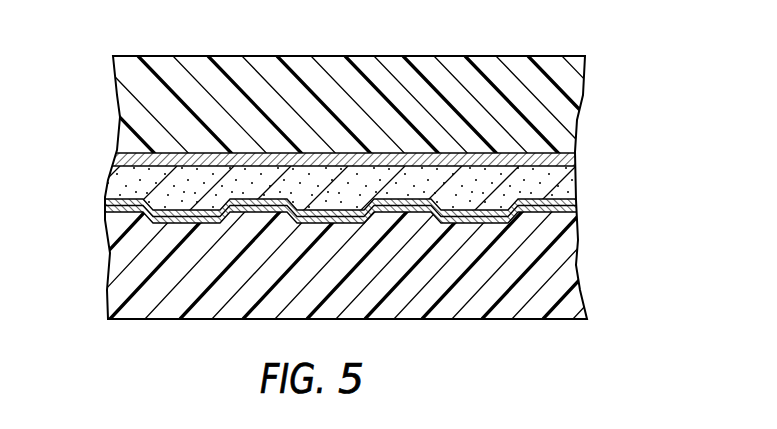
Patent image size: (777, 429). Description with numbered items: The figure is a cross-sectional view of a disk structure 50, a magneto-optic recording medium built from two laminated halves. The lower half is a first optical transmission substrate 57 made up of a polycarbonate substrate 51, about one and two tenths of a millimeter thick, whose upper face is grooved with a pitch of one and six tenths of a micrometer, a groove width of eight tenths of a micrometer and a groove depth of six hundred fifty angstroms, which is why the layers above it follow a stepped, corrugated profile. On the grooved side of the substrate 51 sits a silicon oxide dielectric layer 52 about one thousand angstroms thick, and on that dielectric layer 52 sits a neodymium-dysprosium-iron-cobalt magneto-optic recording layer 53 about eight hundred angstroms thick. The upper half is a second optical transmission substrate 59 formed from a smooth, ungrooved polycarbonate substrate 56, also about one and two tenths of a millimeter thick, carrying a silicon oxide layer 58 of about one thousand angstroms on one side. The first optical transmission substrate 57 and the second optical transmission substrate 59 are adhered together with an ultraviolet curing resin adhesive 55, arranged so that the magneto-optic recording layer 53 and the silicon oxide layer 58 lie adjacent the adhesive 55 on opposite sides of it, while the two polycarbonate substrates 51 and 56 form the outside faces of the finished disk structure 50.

The disk structure 50 is at (88, 55).
The polycarbonate substrate 51 is at (561, 255).
The silicon oxide dielectric layer 52 is at (572, 216).
The magneto-optic recording layer 53 is at (563, 203).
The adhesive 55 is at (573, 185).
The polycarbonate substrate 56 is at (562, 122).
The first optical transmission substrate 57 is at (648, 197).
The silicon oxide layer 58 is at (566, 157).
The second optical transmission substrate 59 is at (647, 105).